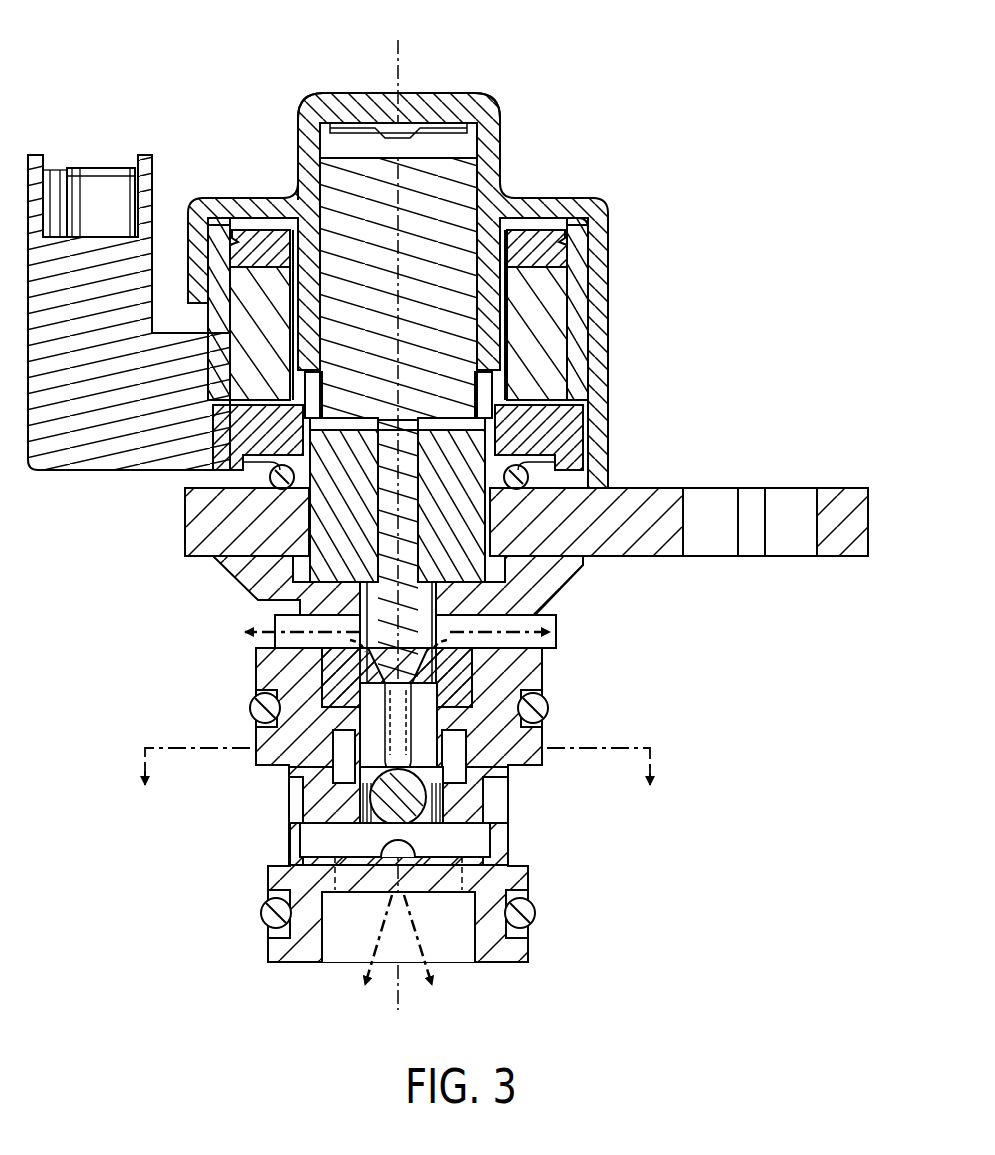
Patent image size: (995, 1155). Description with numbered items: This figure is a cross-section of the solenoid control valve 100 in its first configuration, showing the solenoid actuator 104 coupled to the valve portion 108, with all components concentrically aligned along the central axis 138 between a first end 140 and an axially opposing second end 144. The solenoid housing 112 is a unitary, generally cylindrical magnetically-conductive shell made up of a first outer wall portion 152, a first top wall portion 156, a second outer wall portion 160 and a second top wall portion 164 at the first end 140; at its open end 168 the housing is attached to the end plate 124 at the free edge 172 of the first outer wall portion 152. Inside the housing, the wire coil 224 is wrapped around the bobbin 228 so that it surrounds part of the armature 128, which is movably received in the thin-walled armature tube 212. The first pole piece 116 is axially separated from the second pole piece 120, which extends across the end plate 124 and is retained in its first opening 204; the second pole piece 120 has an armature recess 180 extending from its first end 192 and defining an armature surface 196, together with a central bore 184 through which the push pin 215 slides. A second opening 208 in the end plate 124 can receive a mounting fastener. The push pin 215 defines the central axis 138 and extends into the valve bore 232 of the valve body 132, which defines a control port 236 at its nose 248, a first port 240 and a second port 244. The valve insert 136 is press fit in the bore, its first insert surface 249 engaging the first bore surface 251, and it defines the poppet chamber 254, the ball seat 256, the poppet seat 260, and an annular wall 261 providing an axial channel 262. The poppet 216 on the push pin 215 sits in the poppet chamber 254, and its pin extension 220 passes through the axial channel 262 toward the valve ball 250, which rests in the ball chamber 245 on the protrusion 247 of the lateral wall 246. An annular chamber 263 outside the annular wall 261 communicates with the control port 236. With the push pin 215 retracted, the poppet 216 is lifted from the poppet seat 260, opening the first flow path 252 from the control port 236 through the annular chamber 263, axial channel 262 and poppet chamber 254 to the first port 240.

The solenoid control valve 100 is at (168, 30).
The solenoid actuator 104 is at (727, 190).
The valve portion 108 is at (155, 600).
The solenoid housing 112 is at (597, 410).
The first pole piece 116 is at (487, 270).
The second pole piece 120 is at (387, 518).
The end plate 124 is at (658, 500).
The armature 128 is at (375, 183).
The valve body 132 is at (293, 708).
The valve insert 136 is at (480, 660).
The central axis 138 is at (396, 60).
The first end 140 is at (478, 87).
The second end 144 is at (262, 956).
The first outer wall portion 152 is at (597, 338).
The first top wall portion 156 is at (537, 197).
The second outer wall portion 160 is at (497, 163).
The second top wall portion 164 is at (460, 92).
The open end 168 is at (578, 497).
The free edge 172 is at (600, 497).
The armature recess 180 is at (545, 342).
The central bore 184 is at (367, 548).
The first end of the second pole piece 192 is at (455, 435).
The armature surface 196 is at (337, 478).
The first opening 204 is at (272, 590).
The second opening 208 is at (815, 480).
The armature tube 212 is at (315, 215).
The push pin 215 is at (320, 568).
The poppet 216 is at (360, 600).
The pin extension 220 is at (388, 785).
The wire coil 224 is at (595, 320).
The bobbin 228 is at (507, 282).
The valve bore 232 is at (475, 657).
The control port 236 is at (340, 965).
The first port 240 is at (537, 621).
The second port 244 is at (472, 838).
The ball chamber 245 is at (450, 800).
The lateral wall 246 is at (437, 872).
The protrusion 247 is at (430, 842).
The nose 248 is at (483, 970).
The first insert surface 249 is at (540, 700).
The valve ball 250 is at (392, 842).
The first bore surface 251 is at (478, 762).
The first flow path 252 is at (290, 632).
The poppet chamber 254 is at (452, 598).
The ball seat 256 is at (385, 805).
The poppet seat 260 is at (318, 678).
The annular wall 261 is at (368, 760).
The axial channel 262 is at (355, 713).
The annular chamber 263 is at (470, 740).